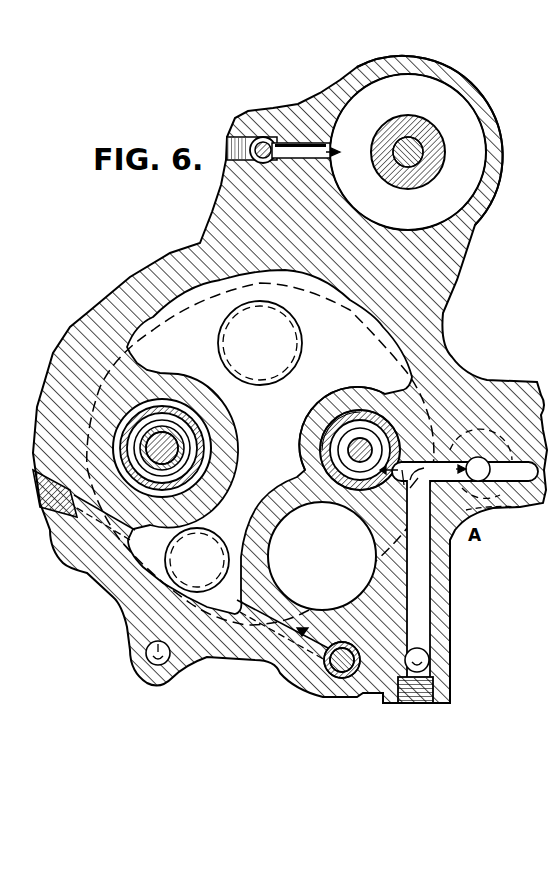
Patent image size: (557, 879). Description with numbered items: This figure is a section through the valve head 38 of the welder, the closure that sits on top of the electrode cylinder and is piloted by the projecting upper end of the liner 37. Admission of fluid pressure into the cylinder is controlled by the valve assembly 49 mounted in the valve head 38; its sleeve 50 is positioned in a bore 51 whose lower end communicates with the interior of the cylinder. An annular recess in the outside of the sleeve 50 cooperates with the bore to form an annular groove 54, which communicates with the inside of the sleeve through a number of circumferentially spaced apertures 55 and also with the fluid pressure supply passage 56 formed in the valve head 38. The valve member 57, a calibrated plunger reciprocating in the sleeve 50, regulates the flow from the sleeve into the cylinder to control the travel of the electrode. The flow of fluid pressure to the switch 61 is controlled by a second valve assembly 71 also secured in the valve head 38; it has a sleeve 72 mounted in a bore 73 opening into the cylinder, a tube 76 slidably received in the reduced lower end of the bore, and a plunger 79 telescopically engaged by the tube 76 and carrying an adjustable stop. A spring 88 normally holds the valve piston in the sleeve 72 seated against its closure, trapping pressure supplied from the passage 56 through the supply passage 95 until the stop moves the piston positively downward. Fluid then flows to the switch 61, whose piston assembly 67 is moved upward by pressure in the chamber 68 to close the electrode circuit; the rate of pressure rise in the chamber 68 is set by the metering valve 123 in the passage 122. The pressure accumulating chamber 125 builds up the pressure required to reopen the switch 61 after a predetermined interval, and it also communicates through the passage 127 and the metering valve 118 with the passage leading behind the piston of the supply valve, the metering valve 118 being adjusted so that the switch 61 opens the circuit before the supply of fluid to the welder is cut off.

The valve head 38 is at (140, 273).
The liner 37 is at (180, 305).
The pressure accumulating chamber 125 is at (370, 317).
The chamber 68 is at (362, 103).
The switch 61 is at (440, 100).
The piston assembly 67 is at (437, 152).
The passage 122 is at (290, 141).
The metering valve 123 is at (263, 138).
The spring 88 is at (166, 422).
The bore 73 is at (202, 427).
The valve assembly 71 is at (207, 430).
The plunger 79 is at (178, 448).
The valve assembly 49 is at (333, 430).
The apertures 55 is at (333, 443).
The bore 51 is at (327, 460).
The tube 76 is at (205, 478).
The sleeve 72 is at (198, 490).
The sleeve 50 is at (337, 406).
The annular groove 54 is at (365, 417).
The valve member 57 is at (352, 485).
The fluid pressure supply passage 56 is at (513, 490).
The fluid pressure supply passage 95 is at (163, 667).
The passage 127 is at (290, 667).
The metering valve 118 is at (329, 668).